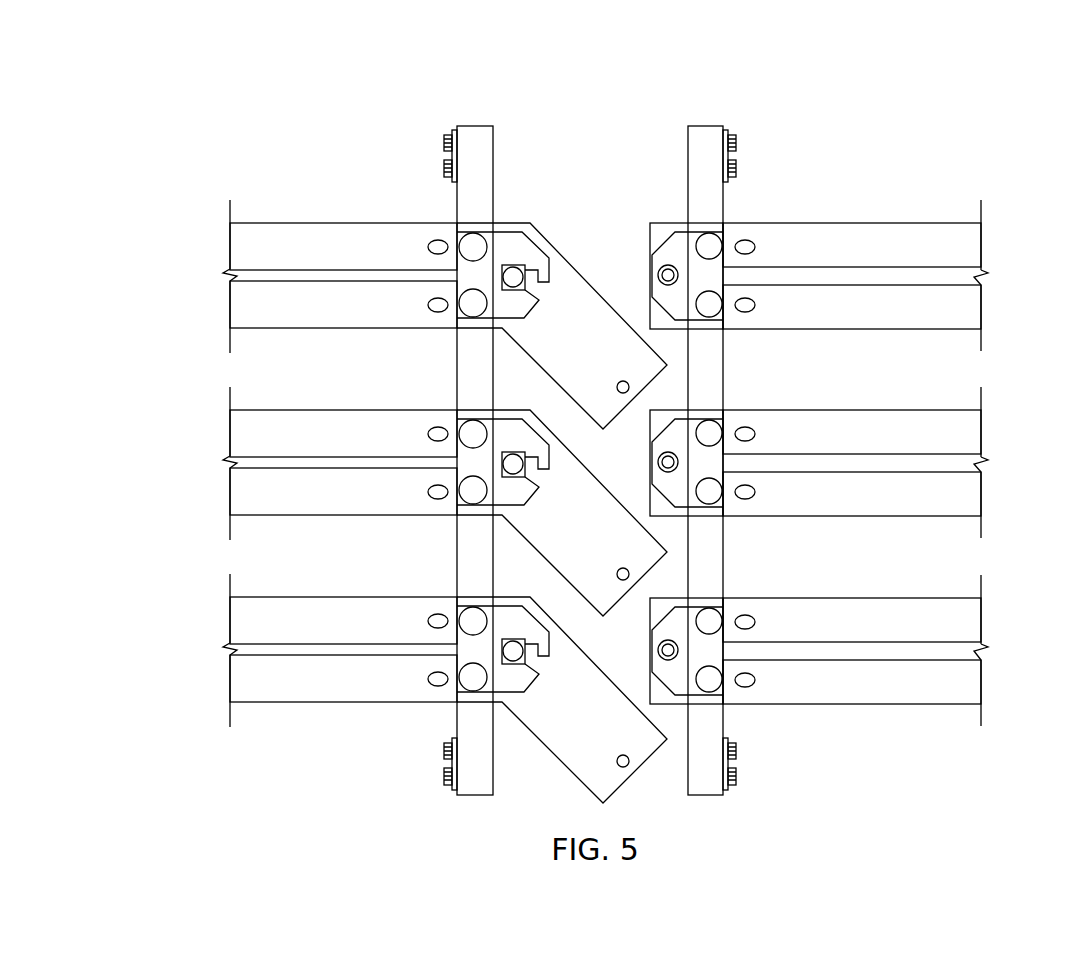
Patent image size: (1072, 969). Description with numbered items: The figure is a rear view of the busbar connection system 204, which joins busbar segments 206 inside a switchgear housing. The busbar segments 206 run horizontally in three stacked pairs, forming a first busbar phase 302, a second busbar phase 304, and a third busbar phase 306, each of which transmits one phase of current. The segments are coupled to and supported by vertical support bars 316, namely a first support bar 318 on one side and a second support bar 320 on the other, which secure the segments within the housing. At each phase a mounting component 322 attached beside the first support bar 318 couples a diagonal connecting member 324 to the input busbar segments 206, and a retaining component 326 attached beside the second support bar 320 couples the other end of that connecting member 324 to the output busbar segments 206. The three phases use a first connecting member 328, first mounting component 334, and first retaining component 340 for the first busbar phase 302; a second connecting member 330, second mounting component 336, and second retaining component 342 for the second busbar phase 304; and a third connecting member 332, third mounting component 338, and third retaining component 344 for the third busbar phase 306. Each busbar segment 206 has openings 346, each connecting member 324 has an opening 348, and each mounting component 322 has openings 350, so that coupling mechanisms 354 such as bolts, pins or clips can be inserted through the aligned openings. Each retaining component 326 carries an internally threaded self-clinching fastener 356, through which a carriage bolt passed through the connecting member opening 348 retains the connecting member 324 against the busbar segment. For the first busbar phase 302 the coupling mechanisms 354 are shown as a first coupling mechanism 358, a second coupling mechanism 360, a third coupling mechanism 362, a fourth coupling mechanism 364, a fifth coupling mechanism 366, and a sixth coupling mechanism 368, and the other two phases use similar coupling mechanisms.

The busbar connection system 204 is at (350, 151).
The busbar segment 206 is at (229, 241).
The first busbar phase 302 is at (155, 651).
The second busbar phase 304 is at (155, 464).
The third busbar phase 306 is at (155, 277).
The support bar 316 is at (770, 109).
The first support bar 318 is at (477, 126).
The second support bar 320 is at (708, 126).
The mounting component 322 is at (507, 233).
The connecting member 324 is at (645, 348).
The retaining component 326 is at (726, 320).
The first connecting member 328 is at (640, 757).
The second connecting member 330 is at (643, 570).
The third connecting member 332 is at (643, 382).
The first mounting component 334 is at (540, 610).
The second mounting component 336 is at (540, 423).
The third mounting component 338 is at (523, 238).
The first retaining component 340 is at (728, 607).
The second retaining component 342 is at (728, 420).
The third retaining component 344 is at (727, 233).
The opening 346 is at (432, 244).
The opening 348 is at (623, 395).
The opening 350 is at (496, 277).
The coupling mechanism 354 is at (449, 213).
The internally threaded self-clinching fastener 356 is at (660, 275).
The first coupling mechanism 358 is at (468, 683).
The second coupling mechanism 360 is at (470, 610).
The third coupling mechanism 362 is at (530, 655).
The fourth coupling mechanism 364 is at (757, 681).
The fifth coupling mechanism 366 is at (757, 623).
The sixth coupling mechanism 368 is at (667, 663).